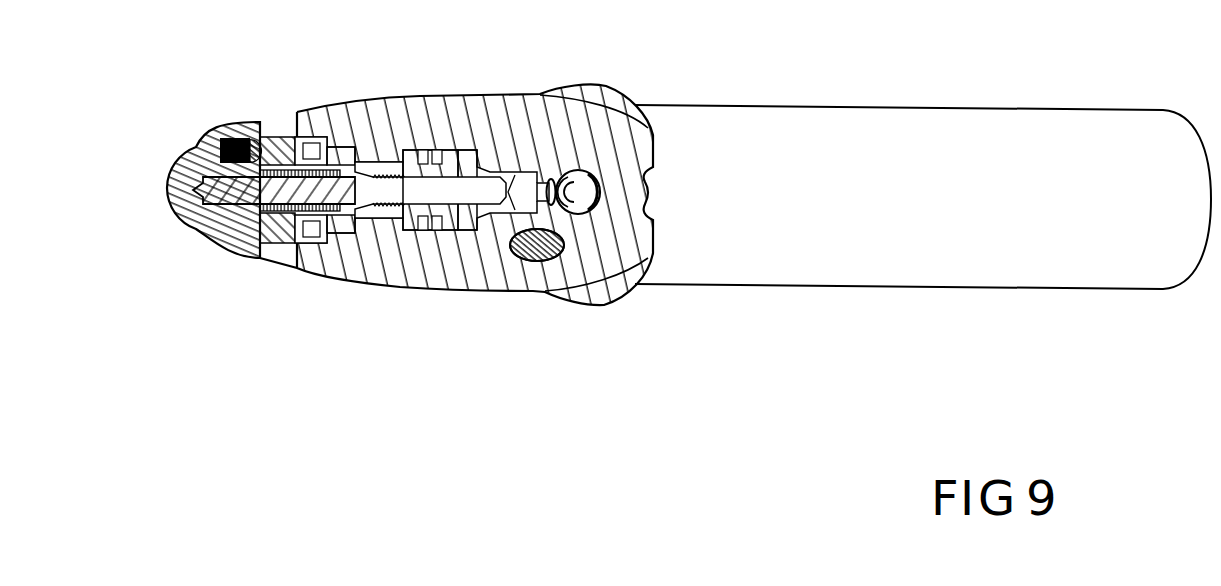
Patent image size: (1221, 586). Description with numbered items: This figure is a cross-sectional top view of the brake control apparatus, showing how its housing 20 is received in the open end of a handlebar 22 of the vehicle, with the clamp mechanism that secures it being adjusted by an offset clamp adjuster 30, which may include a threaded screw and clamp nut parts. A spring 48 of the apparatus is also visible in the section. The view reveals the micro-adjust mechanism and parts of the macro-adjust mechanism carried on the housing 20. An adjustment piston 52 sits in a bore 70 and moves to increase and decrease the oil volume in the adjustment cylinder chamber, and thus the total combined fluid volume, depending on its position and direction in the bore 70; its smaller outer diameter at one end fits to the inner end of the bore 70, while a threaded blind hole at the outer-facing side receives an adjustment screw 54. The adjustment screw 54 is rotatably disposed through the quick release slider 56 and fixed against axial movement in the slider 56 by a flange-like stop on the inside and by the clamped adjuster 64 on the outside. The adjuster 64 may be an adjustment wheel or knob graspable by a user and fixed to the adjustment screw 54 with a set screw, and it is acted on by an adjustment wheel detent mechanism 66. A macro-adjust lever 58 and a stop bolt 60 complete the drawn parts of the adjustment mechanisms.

The housing 20 is at (503, 123).
The handlebar 22 is at (818, 170).
The offset clamp adjuster 30 is at (537, 247).
The spring 48 is at (575, 175).
The adjustment piston 52 is at (455, 210).
The adjustment screw 54 is at (375, 190).
The quick release slider 56 is at (345, 217).
The macro-adjust lever 58 is at (283, 232).
The stop bolt 60 is at (317, 150).
The adjuster 64 is at (178, 188).
The adjustment wheel detent mechanism 66 is at (251, 150).
The bore 70 is at (385, 230).